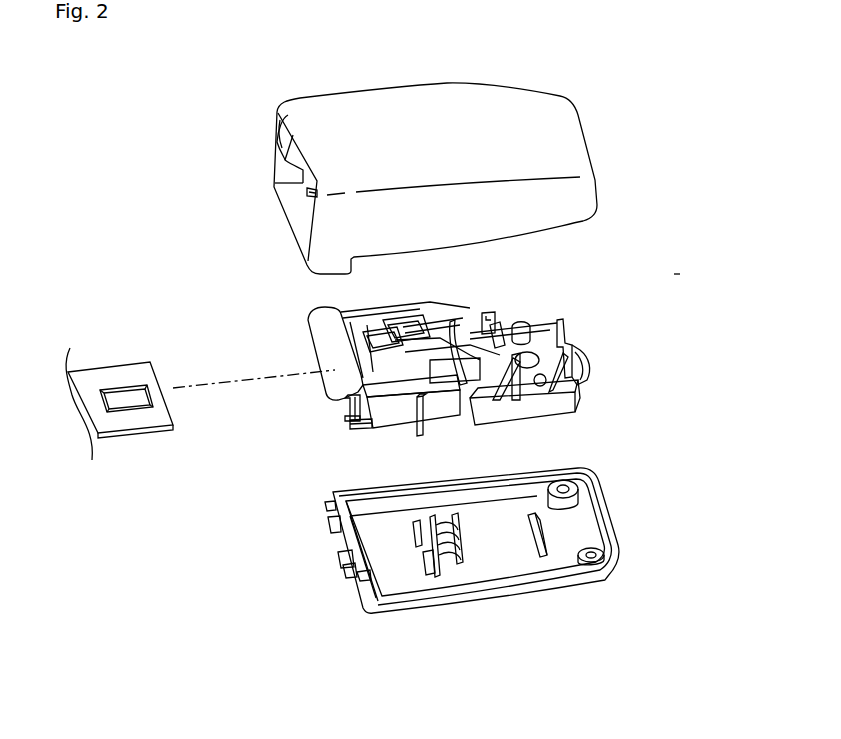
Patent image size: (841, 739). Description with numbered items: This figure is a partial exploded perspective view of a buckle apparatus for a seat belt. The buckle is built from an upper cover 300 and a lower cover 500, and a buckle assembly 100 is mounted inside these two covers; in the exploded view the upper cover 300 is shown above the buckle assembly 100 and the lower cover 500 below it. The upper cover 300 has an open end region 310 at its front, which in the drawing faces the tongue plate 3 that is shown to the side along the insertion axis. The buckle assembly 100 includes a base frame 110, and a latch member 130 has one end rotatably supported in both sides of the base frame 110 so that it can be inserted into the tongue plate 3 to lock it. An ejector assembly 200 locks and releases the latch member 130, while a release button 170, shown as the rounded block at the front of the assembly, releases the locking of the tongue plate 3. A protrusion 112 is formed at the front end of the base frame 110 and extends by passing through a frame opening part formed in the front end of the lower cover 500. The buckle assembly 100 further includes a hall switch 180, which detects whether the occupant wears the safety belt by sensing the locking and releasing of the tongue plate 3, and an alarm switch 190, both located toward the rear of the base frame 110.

The tongue plate 3 is at (108, 375).
The buckle assembly 100 is at (300, 344).
The base frame 110 is at (358, 430).
The protrusion 112 is at (350, 422).
The latch member 130 is at (500, 342).
The release button 170 is at (309, 319).
The hall switch 180 is at (553, 338).
The alarm switch 190 is at (548, 407).
The ejector assembly 200 is at (407, 338).
The upper cover 300 is at (370, 105).
The card insertion opening 310 is at (287, 157).
The lower cover 500 is at (410, 572).